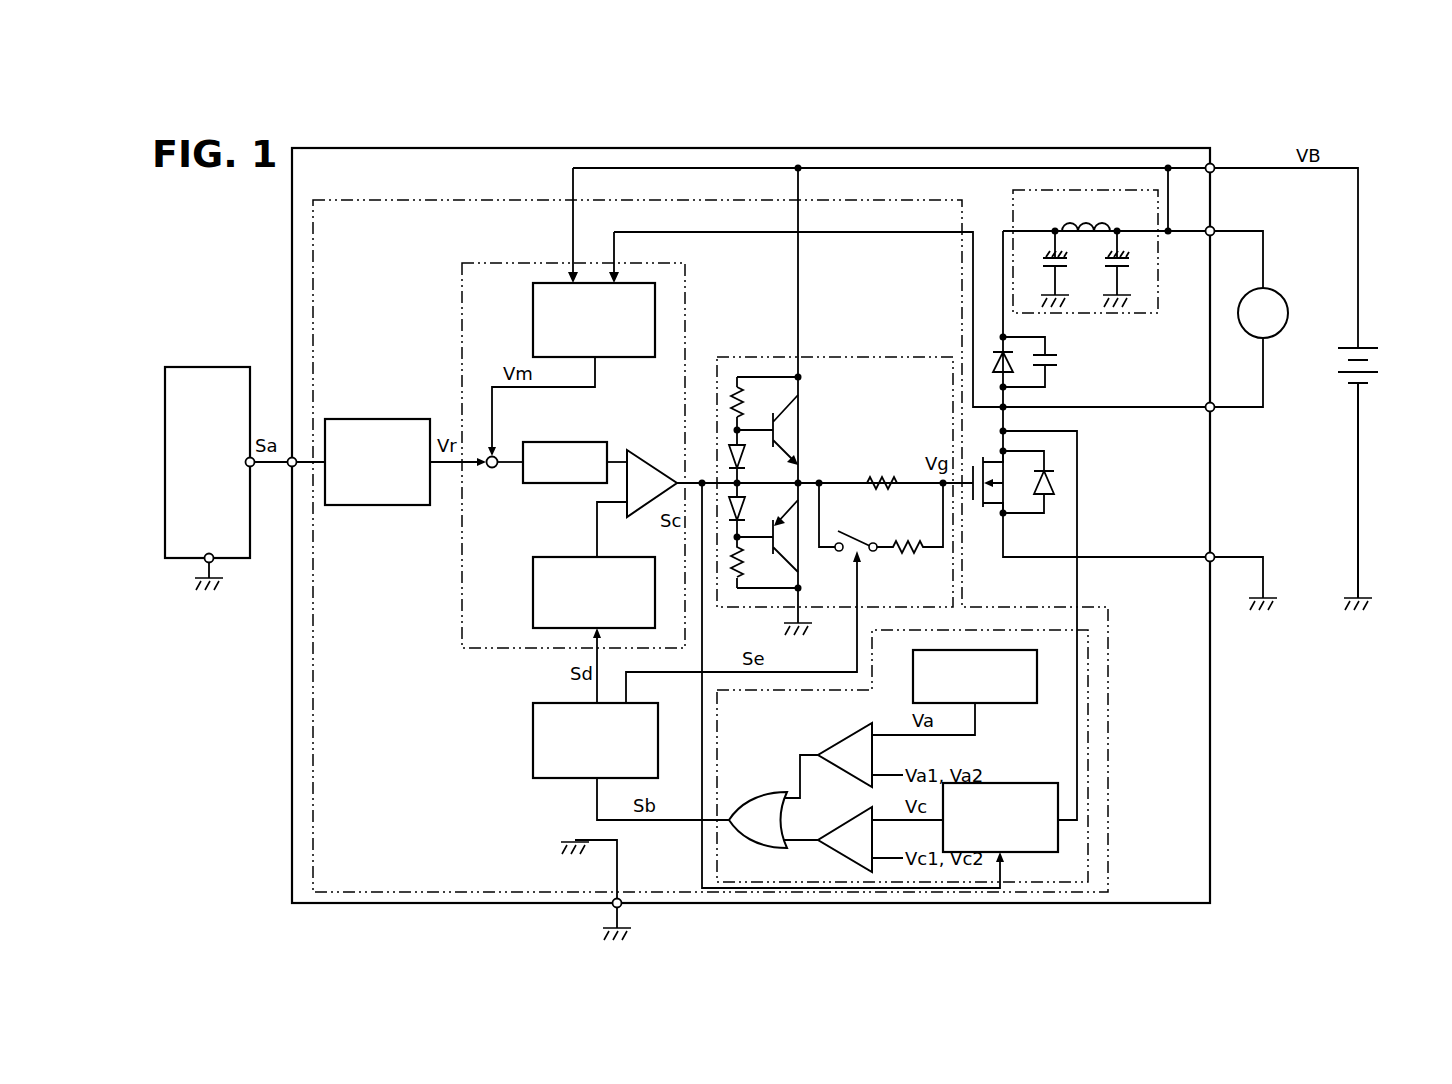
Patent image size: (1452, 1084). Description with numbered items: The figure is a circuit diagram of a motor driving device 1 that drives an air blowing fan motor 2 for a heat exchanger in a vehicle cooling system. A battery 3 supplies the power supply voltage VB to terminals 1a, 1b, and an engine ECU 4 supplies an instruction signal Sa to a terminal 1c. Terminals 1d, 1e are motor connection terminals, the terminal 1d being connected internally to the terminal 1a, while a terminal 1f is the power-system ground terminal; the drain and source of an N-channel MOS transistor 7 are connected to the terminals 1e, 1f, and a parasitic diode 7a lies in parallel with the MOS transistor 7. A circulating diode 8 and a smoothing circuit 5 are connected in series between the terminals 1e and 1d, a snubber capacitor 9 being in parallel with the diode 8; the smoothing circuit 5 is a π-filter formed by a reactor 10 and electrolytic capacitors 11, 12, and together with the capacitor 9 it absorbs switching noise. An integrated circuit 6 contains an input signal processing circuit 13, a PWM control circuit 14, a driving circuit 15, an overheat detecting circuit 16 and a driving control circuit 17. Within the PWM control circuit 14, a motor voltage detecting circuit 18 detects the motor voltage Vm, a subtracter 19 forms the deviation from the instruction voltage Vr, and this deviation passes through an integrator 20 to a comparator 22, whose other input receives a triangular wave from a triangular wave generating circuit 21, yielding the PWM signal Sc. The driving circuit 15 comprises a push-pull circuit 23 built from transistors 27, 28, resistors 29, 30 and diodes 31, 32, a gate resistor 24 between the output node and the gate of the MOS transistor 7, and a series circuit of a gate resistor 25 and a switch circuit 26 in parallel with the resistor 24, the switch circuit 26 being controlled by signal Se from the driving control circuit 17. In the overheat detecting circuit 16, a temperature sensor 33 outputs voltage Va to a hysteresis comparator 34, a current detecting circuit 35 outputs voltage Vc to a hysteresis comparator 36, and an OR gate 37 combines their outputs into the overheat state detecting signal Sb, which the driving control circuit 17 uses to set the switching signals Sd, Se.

The motor driving device 1 is at (806, 136).
The terminal 1a is at (1214, 164).
The terminal 1b is at (622, 907).
The terminal 1c is at (292, 468).
The terminal 1d is at (1214, 227).
The terminal 1e is at (1214, 403).
The terminal 1f is at (1214, 553).
The motor 2 is at (1288, 313).
The battery 3 is at (1362, 346).
The engine ECU 4 is at (207, 367).
The smoothing circuit 5 is at (1104, 276).
The integrated circuit 6 is at (964, 216).
The MOS transistor 7 is at (988, 508).
The parasitic diode 7a is at (1049, 502).
The circulating diode 8 is at (1000, 338).
The snubber capacitor 9 is at (1060, 360).
The reactor 10 is at (1094, 218).
The electrolytic capacitor 11 is at (1070, 264).
The electrolytic capacitor 12 is at (1132, 264).
The input signal processing circuit 13 is at (380, 419).
The PWM control circuit 14 is at (482, 262).
The driving circuit 15 is at (862, 357).
The overheat detecting circuit 16 is at (1110, 676).
The driving control circuit 17 is at (533, 733).
The motor voltage detecting circuit 18 is at (533, 318).
The subtracter 19 is at (492, 468).
The integrator 20 is at (562, 442).
The triangular wave generating circuit 21 is at (533, 590).
The comparator 22 is at (645, 456).
The push-pull circuit 23 is at (819, 401).
The gate resistor 24 is at (884, 478).
The gate resistor 25 is at (908, 555).
The switch circuit 26 is at (864, 555).
The transistor 27 is at (800, 434).
The transistor 28 is at (806, 538).
The resistor 29 is at (745, 404).
The resistor 30 is at (748, 568).
The diode 31 is at (747, 458).
The diode 32 is at (747, 508).
The temperature sensor 33 is at (1037, 674).
The comparator 34 is at (840, 736).
The current detecting circuit 35 is at (1028, 783).
The comparator 36 is at (840, 821).
The OR gate 37 is at (762, 791).